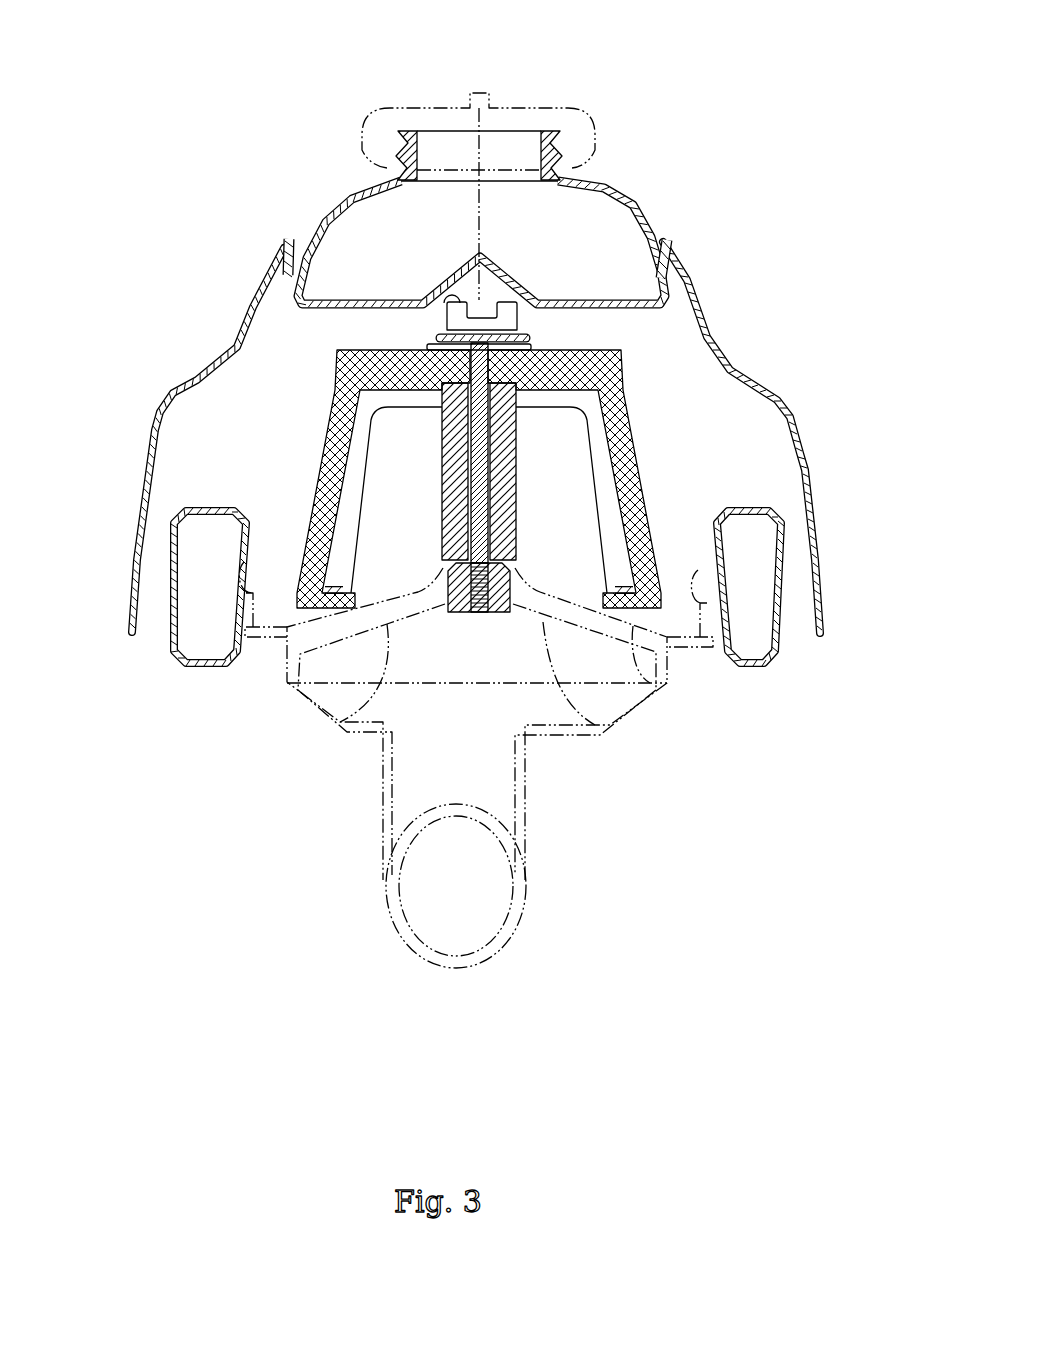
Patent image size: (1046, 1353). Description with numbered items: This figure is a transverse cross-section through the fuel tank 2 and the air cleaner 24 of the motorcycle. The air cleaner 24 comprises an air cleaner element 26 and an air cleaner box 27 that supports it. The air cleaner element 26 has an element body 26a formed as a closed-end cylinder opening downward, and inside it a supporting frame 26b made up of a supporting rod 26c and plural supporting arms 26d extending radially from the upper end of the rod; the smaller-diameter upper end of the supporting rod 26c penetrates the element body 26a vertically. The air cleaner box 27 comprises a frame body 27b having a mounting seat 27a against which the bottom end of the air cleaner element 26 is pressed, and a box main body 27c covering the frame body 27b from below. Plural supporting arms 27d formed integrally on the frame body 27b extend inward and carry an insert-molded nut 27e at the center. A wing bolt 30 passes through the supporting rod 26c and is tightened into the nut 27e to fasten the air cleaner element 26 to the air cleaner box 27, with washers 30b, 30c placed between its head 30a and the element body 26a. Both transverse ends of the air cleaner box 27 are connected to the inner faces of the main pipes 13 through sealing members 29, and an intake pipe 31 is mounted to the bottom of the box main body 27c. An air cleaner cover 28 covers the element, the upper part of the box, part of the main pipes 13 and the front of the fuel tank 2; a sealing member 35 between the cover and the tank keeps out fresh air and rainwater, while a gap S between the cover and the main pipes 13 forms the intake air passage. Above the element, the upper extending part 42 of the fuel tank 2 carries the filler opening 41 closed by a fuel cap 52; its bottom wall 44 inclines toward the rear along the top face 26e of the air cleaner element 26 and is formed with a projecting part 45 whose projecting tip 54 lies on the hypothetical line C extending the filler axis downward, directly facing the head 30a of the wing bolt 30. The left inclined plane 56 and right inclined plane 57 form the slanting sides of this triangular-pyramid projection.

The fuel tank 2 is at (636, 198).
The main pipes 13 is at (218, 652).
The air cleaner 24 is at (593, 790).
The air cleaner element 26 is at (640, 414).
The element body 26a is at (634, 452).
The supporting frame 26b is at (880, 447).
The supporting rod 26c is at (607, 514).
The supporting arms 26d is at (605, 480).
The top face 26e is at (400, 350).
The air cleaner box 27 is at (622, 748).
The mounting seat 27a is at (287, 630).
The frame body 27b is at (670, 660).
The box main body 27c is at (598, 745).
The supporting arms 27d is at (388, 630).
The nut 27e is at (460, 612).
The air cleaner cover 28 is at (250, 306).
The sealing members 29 is at (242, 557).
The wing bolt 30 is at (478, 460).
The head 30a is at (520, 316).
The washer 30b is at (530, 334).
The washer 30c is at (533, 346).
The intake pipe 31 is at (456, 969).
The sealing member 35 is at (282, 258).
The filler opening 41 is at (418, 150).
The upper extending part 42 is at (333, 203).
The bottom wall 44 is at (360, 306).
The projecting part 45 is at (458, 294).
The fuel cap 52 is at (548, 107).
The projecting tip 54 is at (483, 258).
The left inclined plane 56 is at (517, 276).
The right inclined plane 57 is at (468, 292).
The hypothetical straight line C is at (483, 214).
The gap S is at (153, 577).